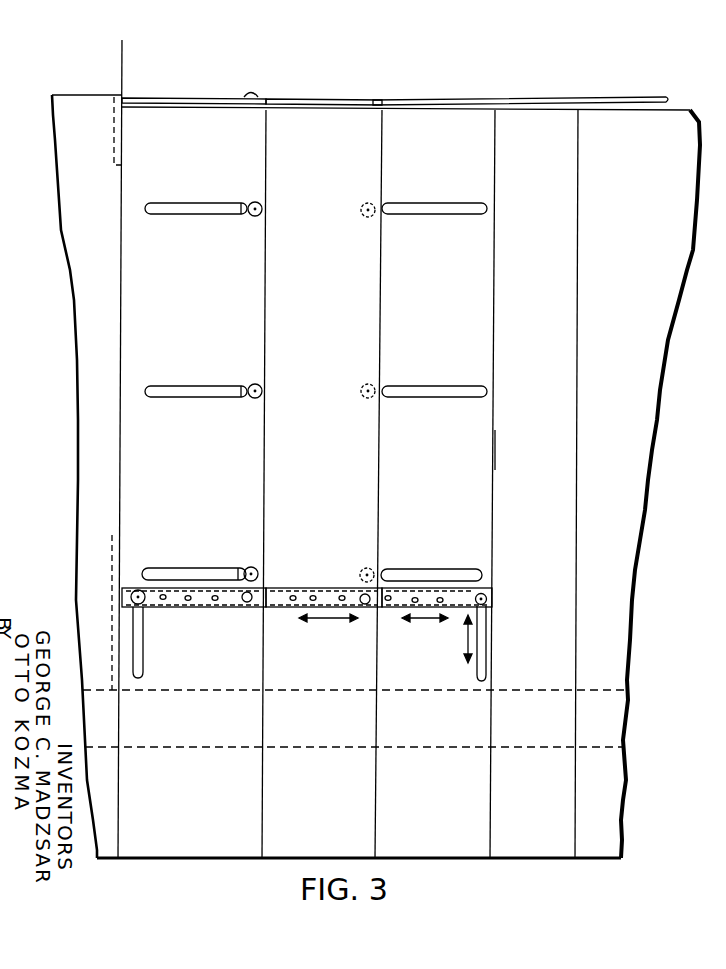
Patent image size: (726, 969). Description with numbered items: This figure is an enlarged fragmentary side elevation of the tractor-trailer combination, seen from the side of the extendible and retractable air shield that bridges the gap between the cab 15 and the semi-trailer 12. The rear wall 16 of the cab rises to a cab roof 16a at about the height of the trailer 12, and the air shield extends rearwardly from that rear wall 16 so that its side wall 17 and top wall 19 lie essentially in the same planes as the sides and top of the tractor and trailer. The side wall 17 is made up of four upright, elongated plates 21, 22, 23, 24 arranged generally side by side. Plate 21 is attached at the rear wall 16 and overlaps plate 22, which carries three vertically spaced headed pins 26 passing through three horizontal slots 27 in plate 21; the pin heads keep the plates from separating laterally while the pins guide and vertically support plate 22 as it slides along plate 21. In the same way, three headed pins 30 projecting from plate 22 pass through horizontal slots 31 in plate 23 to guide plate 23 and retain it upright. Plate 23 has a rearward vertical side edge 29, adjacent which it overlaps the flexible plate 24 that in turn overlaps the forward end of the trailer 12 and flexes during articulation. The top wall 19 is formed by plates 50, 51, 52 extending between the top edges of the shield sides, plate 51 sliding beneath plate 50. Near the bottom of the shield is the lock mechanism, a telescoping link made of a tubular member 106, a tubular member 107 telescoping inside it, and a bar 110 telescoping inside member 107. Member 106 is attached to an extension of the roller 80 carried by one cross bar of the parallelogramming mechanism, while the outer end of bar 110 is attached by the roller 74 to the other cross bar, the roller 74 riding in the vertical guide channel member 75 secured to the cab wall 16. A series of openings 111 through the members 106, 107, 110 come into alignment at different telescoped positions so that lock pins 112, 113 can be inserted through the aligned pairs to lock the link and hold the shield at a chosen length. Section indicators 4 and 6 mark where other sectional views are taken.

The section line 4- 4 is at (583, 589).
The section line 6- 6 is at (122, 40).
The semi-trailer 12 is at (634, 317).
The cab 15 is at (56, 196).
The cab rear wall 16 is at (122, 273).
The cab roof 16a is at (71, 93).
The side wall 17 is at (293, 128).
The top wall 19 is at (375, 96).
The plate 21 is at (208, 318).
The plate 22 is at (334, 318).
The plate 23 is at (456, 318).
The plate 24 is at (549, 318).
The headed pins 26 is at (263, 208).
The slots 27 is at (210, 209).
The rearward vertical side edge 29 is at (494, 452).
The headed pins 30 is at (361, 207).
The slots 31 is at (443, 209).
The plate 50 is at (192, 98).
The plate 51 is at (318, 100).
The plate 52 is at (612, 100).
The roller 74 is at (486, 596).
The vertical guide channel member 75 is at (486, 631).
The roller 80 is at (135, 590).
The tubular member 106 is at (207, 608).
The tubular member 107 is at (300, 588).
The bar 110 is at (460, 607).
The openings 111 is at (165, 603).
The lock pin 112 is at (248, 603).
The lock pin 113 is at (365, 607).